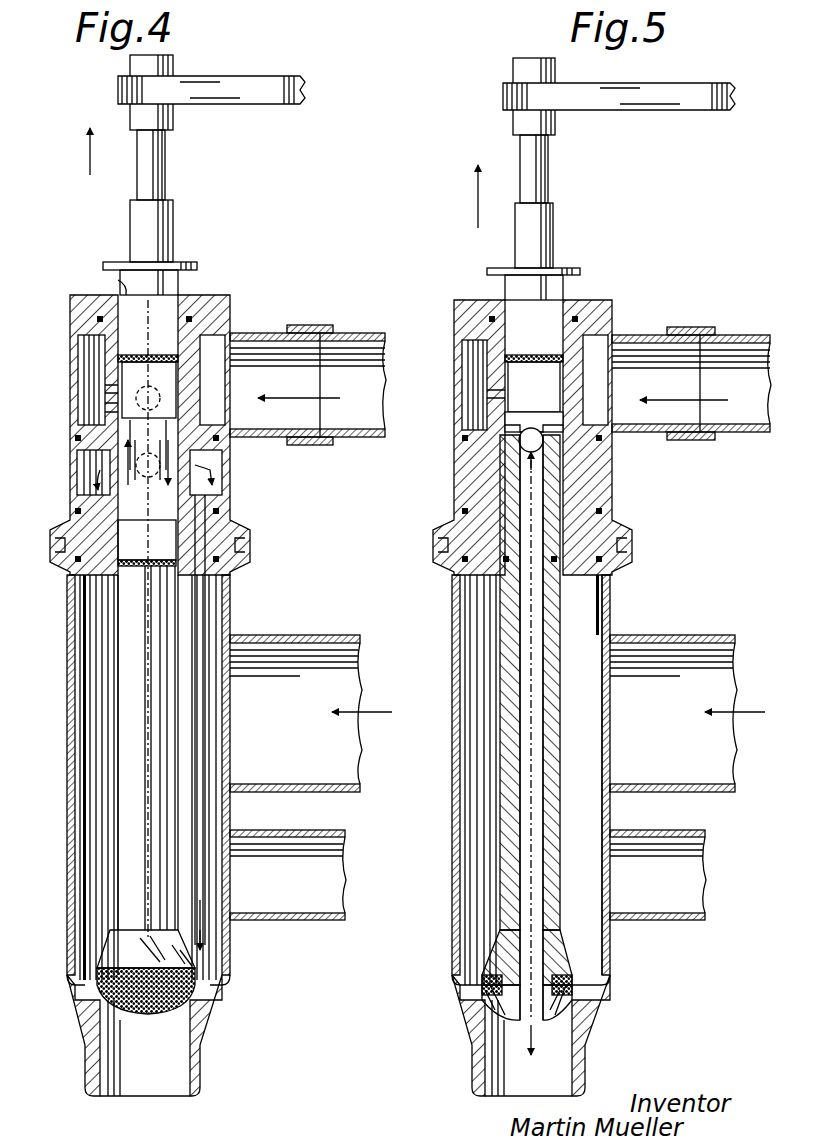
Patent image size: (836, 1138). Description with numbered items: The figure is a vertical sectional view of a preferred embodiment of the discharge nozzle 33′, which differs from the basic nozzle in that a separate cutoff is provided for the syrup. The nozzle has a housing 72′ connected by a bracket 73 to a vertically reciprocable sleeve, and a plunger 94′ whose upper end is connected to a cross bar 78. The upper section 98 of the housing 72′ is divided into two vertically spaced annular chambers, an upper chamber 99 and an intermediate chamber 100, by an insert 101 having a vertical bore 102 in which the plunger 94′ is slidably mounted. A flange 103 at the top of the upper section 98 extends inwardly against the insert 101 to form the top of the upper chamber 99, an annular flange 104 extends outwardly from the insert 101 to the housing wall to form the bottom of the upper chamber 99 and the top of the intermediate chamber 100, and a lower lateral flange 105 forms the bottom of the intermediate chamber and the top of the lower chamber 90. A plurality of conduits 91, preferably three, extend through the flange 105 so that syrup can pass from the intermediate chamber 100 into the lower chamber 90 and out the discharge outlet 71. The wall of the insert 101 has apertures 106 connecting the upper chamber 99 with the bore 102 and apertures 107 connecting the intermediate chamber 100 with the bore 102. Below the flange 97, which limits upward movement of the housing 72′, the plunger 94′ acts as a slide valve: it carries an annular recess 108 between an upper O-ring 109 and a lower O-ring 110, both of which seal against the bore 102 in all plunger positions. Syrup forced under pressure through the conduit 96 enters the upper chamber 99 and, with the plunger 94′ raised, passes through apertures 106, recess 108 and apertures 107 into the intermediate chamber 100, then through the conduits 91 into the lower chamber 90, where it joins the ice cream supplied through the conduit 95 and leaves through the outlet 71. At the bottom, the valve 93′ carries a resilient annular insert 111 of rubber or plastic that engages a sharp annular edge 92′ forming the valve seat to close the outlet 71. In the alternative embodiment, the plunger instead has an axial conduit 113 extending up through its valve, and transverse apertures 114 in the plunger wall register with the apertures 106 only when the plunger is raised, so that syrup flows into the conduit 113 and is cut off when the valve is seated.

In FIG. 4, the cross bar 78 is at (250, 86).
In FIG. 5, the cross bar 78 is at (695, 98).
In FIG. 4, the plunger 94′ is at (162, 168).
In FIG. 4, the flange 97 is at (186, 262).
In FIG. 5, the flange 97 is at (580, 270).
In FIG. 4, the insert 101 is at (196, 300).
In FIG. 4, the flange 103 is at (210, 300).
In FIG. 5, the flange 103 is at (595, 380).
In FIG. 4, the vertical bore 102 is at (127, 297).
In FIG. 4, the upper O-ring 109 is at (140, 355).
In FIG. 5, the upper O-ring 109 is at (518, 330).
In FIG. 4, the conduit 96 is at (263, 333).
In FIG. 5, the conduit 96 is at (650, 335).
In FIG. 4, the upper chamber 99 is at (90, 351).
In FIG. 5, the upper chamber 99 is at (476, 376).
In FIG. 4, the upper section 98 is at (78, 393).
In FIG. 4, the annular flange 104 is at (102, 414).
In FIG. 4, the intermediate chamber 100 is at (86, 470).
In FIG. 4, the lateral flange 105 is at (86, 522).
In FIG. 5, the lateral flange 105 is at (532, 437).
In FIG. 4, the apertures 106 is at (200, 398).
In FIG. 5, the apertures 106 is at (490, 405).
In FIG. 4, the apertures 107 is at (220, 470).
In FIG. 4, the annular recess 108 is at (147, 543).
In FIG. 4, the lower O-ring 110 is at (140, 568).
In FIG. 5, the lower O-ring 110 is at (505, 580).
In FIG. 4, the housing 72′ is at (66, 616).
In FIG. 4, the discharge nozzle 33′ is at (66, 679).
In FIG. 4, the conduit 95 is at (305, 635).
In FIG. 5, the conduit 95 is at (716, 635).
In FIG. 4, the conduits 91 is at (112, 815).
In FIG. 4, the lower chamber 90 is at (78, 878).
In FIG. 5, the lower chamber 90 is at (470, 810).
In FIG. 4, the bracket 73 is at (300, 925).
In FIG. 5, the bracket 73 is at (692, 846).
In FIG. 4, the sharp annular edge 92′ is at (196, 984).
In FIG. 5, the sharp annular edge 92′ is at (573, 995).
In FIG. 4, the resilient annular insert 111 is at (183, 1000).
In FIG. 5, the resilient annular insert 111 is at (484, 1000).
In FIG. 4, the valve 93′ is at (130, 1010).
In FIG. 4, the discharge outlet 71 is at (90, 1066).
In FIG. 5, the discharge outlet 71 is at (478, 1072).
In FIG. 5, the conduit 113 is at (537, 713).
In FIG. 5, the transverse apertures 114 is at (515, 446).